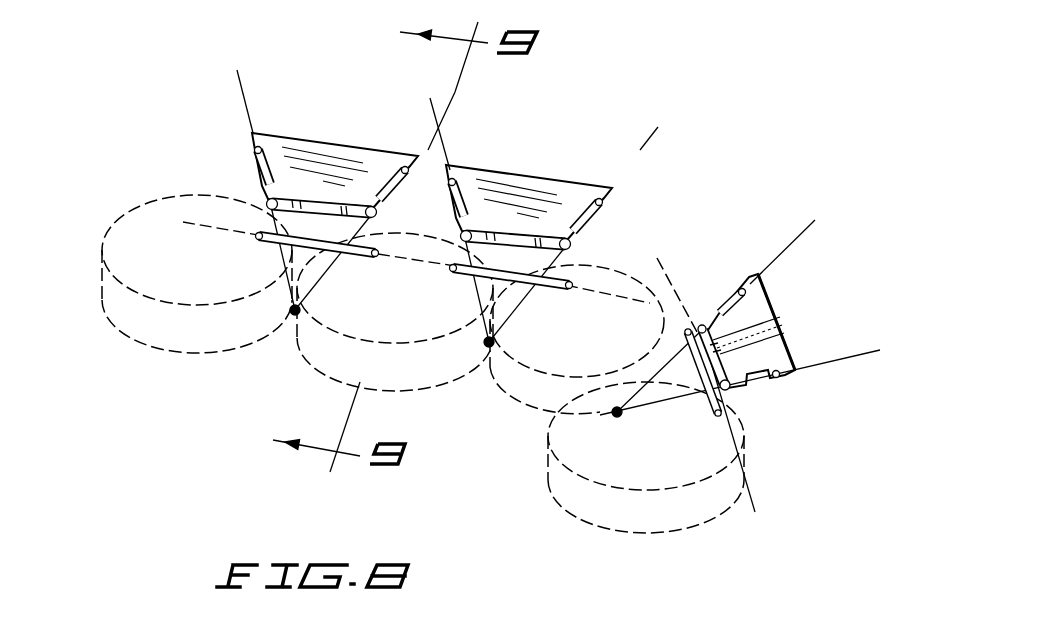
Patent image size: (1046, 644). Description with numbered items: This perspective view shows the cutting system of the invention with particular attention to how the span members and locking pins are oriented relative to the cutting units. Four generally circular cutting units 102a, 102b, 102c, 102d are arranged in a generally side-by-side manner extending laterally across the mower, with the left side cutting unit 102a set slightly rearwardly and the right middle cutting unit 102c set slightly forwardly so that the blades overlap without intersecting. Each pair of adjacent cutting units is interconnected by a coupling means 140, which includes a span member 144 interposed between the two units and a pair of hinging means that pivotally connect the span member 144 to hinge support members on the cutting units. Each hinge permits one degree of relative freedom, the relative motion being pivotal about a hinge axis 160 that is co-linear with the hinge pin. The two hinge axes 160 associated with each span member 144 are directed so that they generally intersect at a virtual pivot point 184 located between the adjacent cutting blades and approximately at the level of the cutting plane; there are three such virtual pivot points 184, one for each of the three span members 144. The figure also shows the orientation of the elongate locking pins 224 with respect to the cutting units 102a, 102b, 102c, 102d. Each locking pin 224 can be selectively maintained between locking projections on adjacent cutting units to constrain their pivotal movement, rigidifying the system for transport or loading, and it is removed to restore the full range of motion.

The left side cutting unit 102a is at (141, 341).
The cutting unit 102b is at (340, 375).
The right middle cutting unit 102c is at (531, 411).
The cutting unit 102d is at (575, 517).
The coupling means 140 is at (559, 223).
The span member 144 is at (812, 330).
The hinge axis 160 is at (238, 82).
The virtual pivot point 184 is at (291, 316).
The locking pin 224 is at (263, 230).